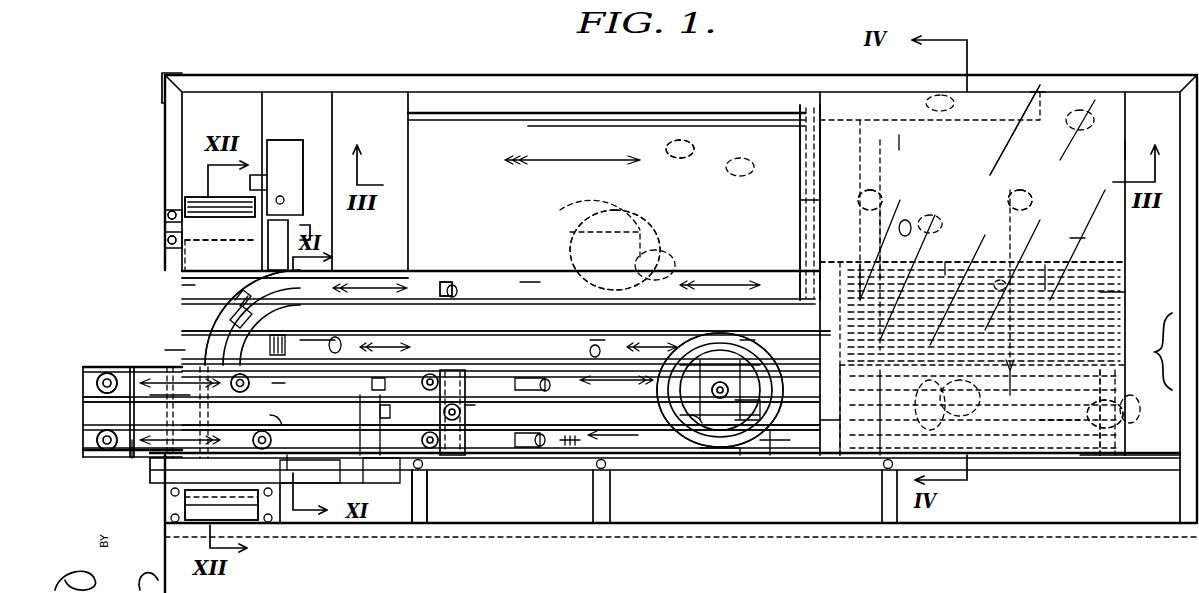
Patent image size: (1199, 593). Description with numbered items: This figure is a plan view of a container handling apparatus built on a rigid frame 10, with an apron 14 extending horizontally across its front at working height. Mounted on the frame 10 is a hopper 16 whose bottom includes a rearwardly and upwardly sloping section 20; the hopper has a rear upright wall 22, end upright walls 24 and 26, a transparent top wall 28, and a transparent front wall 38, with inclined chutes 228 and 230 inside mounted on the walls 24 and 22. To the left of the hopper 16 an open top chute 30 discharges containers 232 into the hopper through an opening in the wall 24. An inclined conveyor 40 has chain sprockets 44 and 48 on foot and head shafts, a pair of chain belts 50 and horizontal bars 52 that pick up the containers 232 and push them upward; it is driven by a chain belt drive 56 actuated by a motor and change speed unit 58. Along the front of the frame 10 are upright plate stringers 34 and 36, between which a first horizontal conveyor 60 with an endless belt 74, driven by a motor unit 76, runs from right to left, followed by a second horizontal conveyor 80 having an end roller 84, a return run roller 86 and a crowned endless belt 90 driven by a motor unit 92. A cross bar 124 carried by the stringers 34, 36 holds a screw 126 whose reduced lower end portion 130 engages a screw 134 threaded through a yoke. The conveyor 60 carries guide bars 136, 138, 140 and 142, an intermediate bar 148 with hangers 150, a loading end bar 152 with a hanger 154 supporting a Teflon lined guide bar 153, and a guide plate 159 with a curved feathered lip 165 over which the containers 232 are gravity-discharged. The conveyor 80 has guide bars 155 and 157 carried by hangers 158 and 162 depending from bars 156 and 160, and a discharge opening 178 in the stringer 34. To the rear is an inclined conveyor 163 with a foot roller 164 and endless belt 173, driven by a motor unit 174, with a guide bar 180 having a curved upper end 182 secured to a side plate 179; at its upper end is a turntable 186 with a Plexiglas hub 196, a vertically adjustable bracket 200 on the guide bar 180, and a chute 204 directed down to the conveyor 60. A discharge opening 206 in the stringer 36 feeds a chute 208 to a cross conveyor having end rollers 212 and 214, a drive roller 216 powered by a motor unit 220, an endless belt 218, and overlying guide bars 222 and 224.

The frame 10 is at (1149, 351).
The apron 14 is at (1057, 550).
The hopper 16 is at (1090, 243).
The rearwardly and upwardly sloping section 20 is at (1090, 140).
The upright wall 22 is at (1035, 92).
The upright wall 24 is at (808, 112).
The upright wall 26 is at (1125, 142).
The top wall 28 is at (899, 136).
The open top chute 30 is at (483, 140).
The plate stringer 34 is at (501, 410).
The plate stringer 36 is at (553, 455).
The front wall 38 is at (1096, 458).
The inclined conveyor 40 is at (897, 262).
The chain sprocket 44 is at (1125, 262).
The chain sprocket 48 is at (828, 400).
The chain belt 50 is at (1125, 290).
The bar 52 is at (1045, 267).
The chain belt drive 56 is at (784, 220).
The electric motor and change speed unit 58 is at (880, 178).
The first horizontal conveyor 60 is at (643, 421).
The endless belt 74 is at (772, 456).
The electric motor and change speed unit 76 is at (870, 402).
The second horizontal conveyor 80 is at (360, 425).
The end roller 84 is at (96, 385).
The return run roller 86 is at (400, 463).
The endless belt 90 is at (116, 410).
The electric motor and change speed unit 92 is at (487, 290).
The cross bar 124 is at (511, 384).
The screw 126 is at (488, 411).
The lower end portion 130 is at (712, 382).
The screw 134 is at (764, 470).
The guide bar 136 is at (548, 421).
The guide bar 138 is at (480, 440).
The guide bar 140 is at (600, 345).
The guide bar 142 is at (497, 455).
The bar 148 is at (826, 430).
The hanger 150 is at (355, 450).
The bar 152 is at (1068, 432).
The guide bar 153 is at (985, 395).
The hanger 154 is at (1120, 387).
The guide bar 155 is at (284, 384).
The bar 156 is at (397, 413).
The guide bar 157 is at (256, 413).
The hanger 158 is at (372, 384).
The guide plate 159 is at (1040, 395).
The bar 160 is at (128, 455).
The hanger 162 is at (163, 411).
The inclined conveyor 163 is at (707, 326).
The foot roller 164 is at (183, 290).
The lip 165 is at (950, 265).
The endless belt 173 is at (537, 280).
The electric motor and change speed unit 174 is at (650, 215).
The discharge opening 178 is at (277, 340).
The side plate 179 is at (173, 353).
The guide bar 180 is at (348, 345).
The curved upper end portion 182 is at (772, 347).
The turntable 186 is at (738, 458).
The hub 196 is at (674, 411).
The bracket 200 is at (746, 340).
The chute 204 is at (645, 458).
The discharge opening 206 is at (295, 472).
The chute 208 is at (287, 468).
The end roller 212 is at (175, 496).
The end roller 214 is at (172, 258).
The drive roller 216 is at (203, 196).
The endless belt 218 is at (165, 222).
The electric motor and change speed unit 220 is at (280, 148).
The guide bar 222 is at (236, 286).
The guide bar 224 is at (187, 300).
The inclined chute 228 is at (878, 198).
The inclined chute 230 is at (975, 125).
The container 232 is at (96, 441).